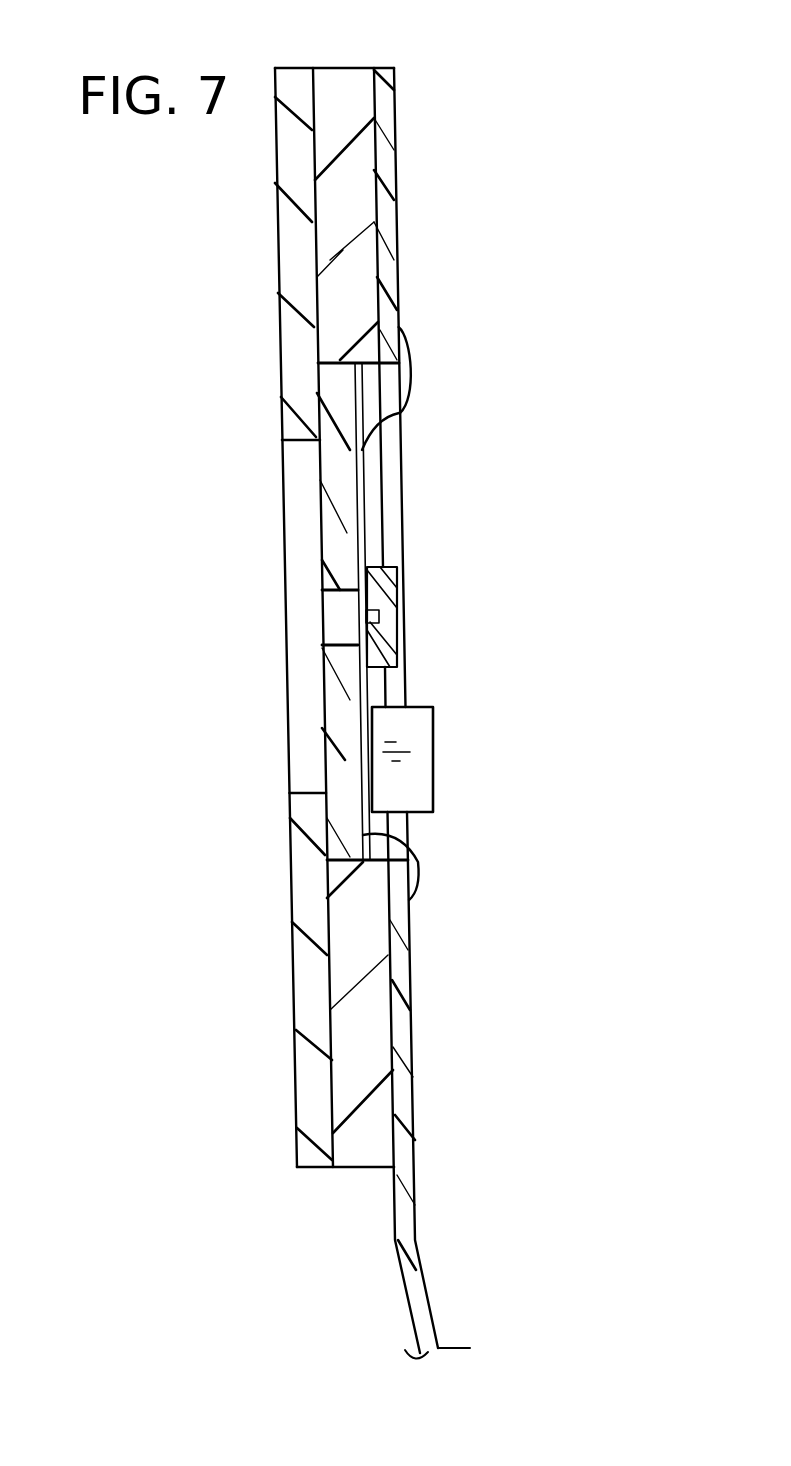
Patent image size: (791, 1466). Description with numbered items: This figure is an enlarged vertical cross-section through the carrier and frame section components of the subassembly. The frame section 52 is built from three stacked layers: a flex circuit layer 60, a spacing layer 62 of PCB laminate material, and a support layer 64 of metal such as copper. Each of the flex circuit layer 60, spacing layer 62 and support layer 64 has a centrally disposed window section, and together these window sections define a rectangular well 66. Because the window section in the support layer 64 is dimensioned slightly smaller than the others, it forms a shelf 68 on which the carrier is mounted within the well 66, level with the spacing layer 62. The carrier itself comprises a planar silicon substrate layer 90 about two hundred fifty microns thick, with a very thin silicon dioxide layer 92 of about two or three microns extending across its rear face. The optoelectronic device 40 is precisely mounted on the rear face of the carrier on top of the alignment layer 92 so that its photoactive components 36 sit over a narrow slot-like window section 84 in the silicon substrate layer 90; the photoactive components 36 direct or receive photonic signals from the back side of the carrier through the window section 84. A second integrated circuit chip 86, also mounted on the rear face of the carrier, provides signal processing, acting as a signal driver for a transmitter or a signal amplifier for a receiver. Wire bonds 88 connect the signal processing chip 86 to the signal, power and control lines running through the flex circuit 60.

The frame section 52 is at (425, 86).
The flex circuit layer 60 is at (397, 228).
The spacing layer 62 is at (343, 68).
The support layer 64 is at (275, 246).
The rectangular well 66 is at (480, 496).
The shelf 68 is at (318, 373).
The wire bonds 88 is at (412, 373).
The silicon substrate layer 90 is at (320, 522).
The photoactive components 36 is at (365, 615).
The optoelectronic device 40 is at (397, 617).
The window section 84 is at (362, 648).
The signal processing chip 86 is at (433, 742).
The silicon dioxide layer 92 is at (365, 700).